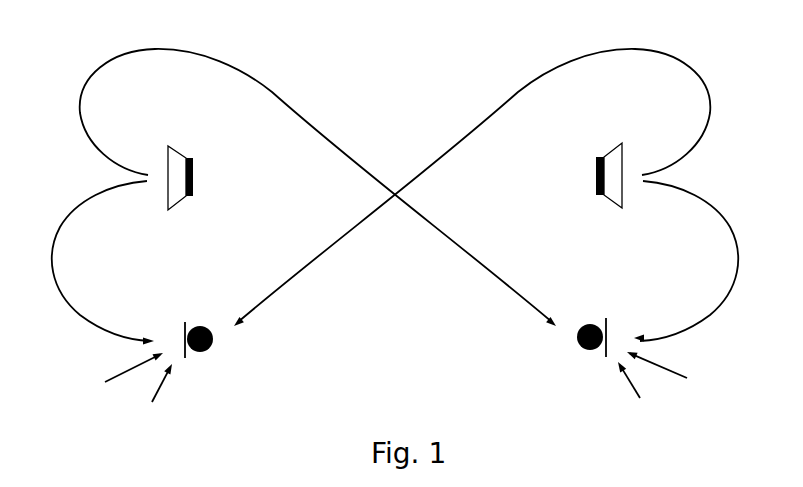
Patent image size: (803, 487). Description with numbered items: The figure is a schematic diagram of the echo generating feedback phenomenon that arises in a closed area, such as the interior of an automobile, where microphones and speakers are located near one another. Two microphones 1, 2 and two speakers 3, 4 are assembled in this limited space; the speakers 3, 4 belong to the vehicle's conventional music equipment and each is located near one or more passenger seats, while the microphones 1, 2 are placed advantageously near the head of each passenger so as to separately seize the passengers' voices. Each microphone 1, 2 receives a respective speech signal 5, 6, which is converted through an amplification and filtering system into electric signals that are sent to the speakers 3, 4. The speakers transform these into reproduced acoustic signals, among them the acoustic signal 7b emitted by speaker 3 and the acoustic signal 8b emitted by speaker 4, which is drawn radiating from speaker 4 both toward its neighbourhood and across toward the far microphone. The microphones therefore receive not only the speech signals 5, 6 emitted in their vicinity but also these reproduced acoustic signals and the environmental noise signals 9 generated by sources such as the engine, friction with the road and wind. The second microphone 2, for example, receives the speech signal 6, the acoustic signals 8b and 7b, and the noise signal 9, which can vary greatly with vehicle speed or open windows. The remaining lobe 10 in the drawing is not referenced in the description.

The first microphone 1 is at (205, 350).
The second microphone 2 is at (580, 347).
The speaker 3 is at (610, 200).
The speaker 4 is at (172, 197).
The speech signal 5 is at (128, 369).
The speech signal 6 is at (668, 369).
The reproduced acoustic signal 7b is at (738, 265).
The reproduced acoustic signal 8b is at (107, 58).
The environmental noise signal 9 is at (162, 387).
The directional lobe of second loudspeaker toward first microphone 10 is at (687, 58).